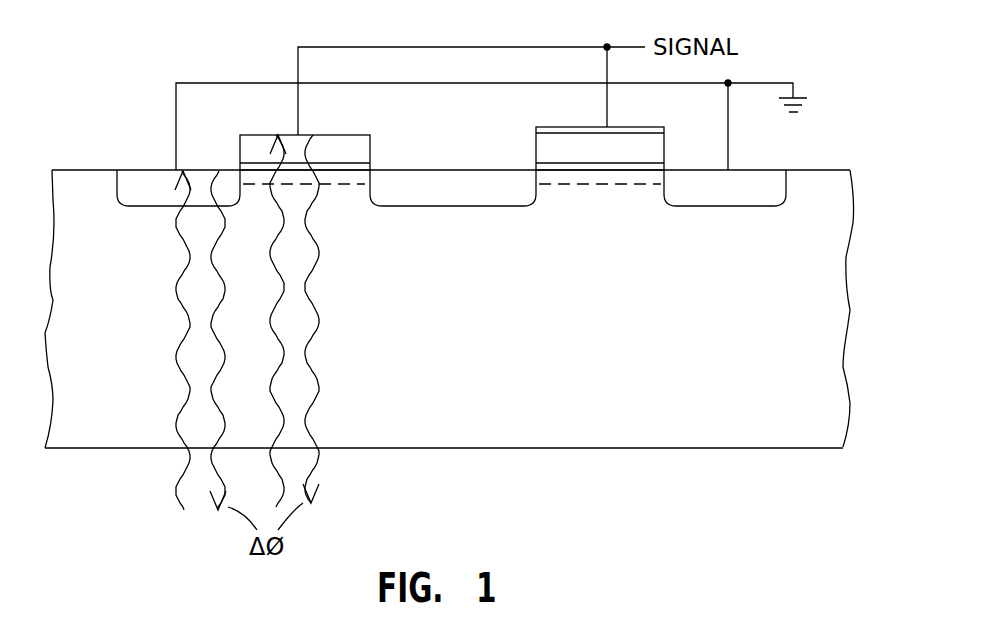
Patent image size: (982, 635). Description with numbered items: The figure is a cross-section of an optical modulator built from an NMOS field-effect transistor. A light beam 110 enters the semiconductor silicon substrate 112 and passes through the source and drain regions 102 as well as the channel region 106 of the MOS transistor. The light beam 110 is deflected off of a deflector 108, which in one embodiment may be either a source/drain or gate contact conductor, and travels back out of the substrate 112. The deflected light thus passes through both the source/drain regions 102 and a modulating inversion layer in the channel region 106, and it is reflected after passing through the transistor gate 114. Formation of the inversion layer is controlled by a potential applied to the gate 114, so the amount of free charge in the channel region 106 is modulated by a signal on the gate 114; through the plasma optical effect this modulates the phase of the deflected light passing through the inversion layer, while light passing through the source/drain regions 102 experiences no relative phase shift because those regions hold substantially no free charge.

The source and drain regions 102 is at (133, 180).
The channel region 106 is at (600, 175).
The deflector 108 is at (173, 168).
The light beam 110 is at (180, 507).
The semiconductor silicon substrate 112 is at (818, 429).
The transistor gate 114 is at (362, 148).